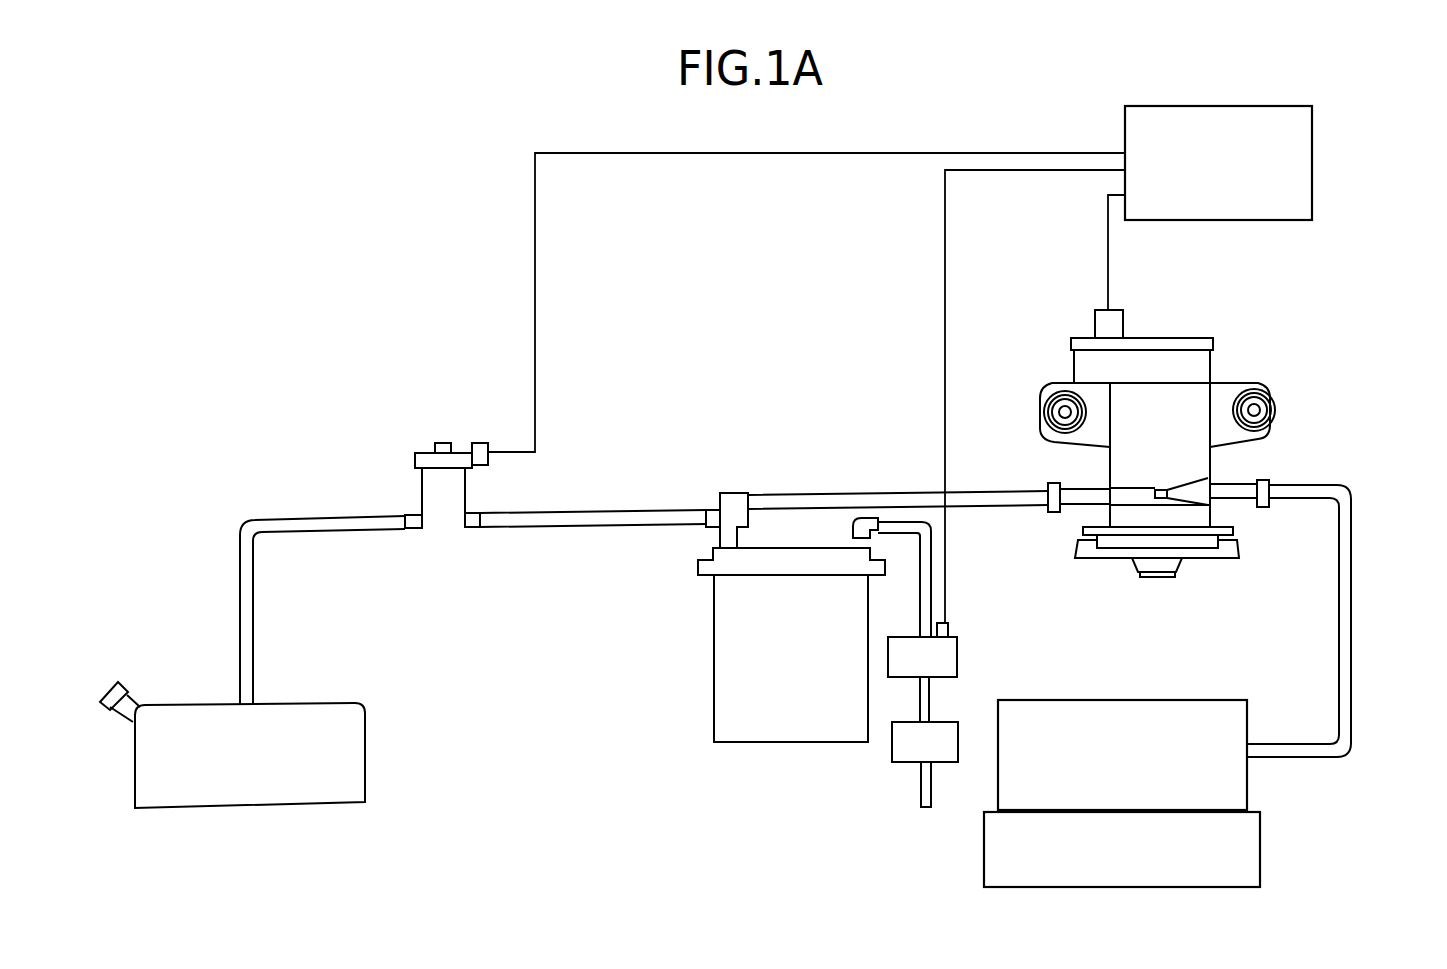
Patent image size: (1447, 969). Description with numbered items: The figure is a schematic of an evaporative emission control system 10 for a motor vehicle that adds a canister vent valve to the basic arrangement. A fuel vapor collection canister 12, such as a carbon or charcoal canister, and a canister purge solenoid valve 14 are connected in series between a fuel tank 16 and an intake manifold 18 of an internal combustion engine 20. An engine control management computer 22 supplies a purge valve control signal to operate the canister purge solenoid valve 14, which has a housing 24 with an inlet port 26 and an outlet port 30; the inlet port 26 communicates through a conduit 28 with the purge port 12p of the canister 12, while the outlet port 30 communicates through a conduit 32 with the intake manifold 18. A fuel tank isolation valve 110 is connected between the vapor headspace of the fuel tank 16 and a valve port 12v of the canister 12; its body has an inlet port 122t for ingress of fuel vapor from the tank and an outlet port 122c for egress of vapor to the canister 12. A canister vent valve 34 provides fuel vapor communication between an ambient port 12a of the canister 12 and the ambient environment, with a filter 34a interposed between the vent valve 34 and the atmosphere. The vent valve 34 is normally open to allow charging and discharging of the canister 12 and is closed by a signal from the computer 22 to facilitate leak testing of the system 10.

The evaporative emission control system 10 is at (300, 244).
The fuel vapor collection canister 12 is at (735, 613).
The purge port 12p is at (737, 500).
The ambient port 12a is at (868, 518).
The valve port 12v is at (718, 522).
The canister purge solenoid valve 14 is at (1213, 365).
The fuel tank 16 is at (208, 705).
The intake manifold 18 is at (1122, 722).
The internal combustion engine 20 is at (1260, 838).
The engine control management computer 22 is at (1312, 142).
The housing 24 is at (1112, 473).
The inlet port 26 is at (1075, 500).
The conduit 28 is at (957, 508).
The outlet port 30 is at (1262, 478).
The conduit 32 is at (1352, 640).
The canister vent valve 34 is at (957, 642).
The filter 34a is at (892, 748).
The fuel tank isolation valve 110 is at (422, 496).
The inlet port 122t is at (409, 525).
The outlet port 122c is at (470, 527).